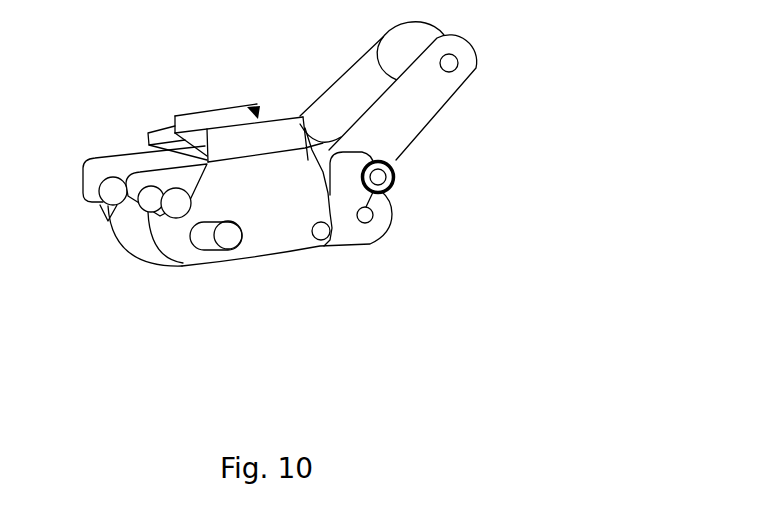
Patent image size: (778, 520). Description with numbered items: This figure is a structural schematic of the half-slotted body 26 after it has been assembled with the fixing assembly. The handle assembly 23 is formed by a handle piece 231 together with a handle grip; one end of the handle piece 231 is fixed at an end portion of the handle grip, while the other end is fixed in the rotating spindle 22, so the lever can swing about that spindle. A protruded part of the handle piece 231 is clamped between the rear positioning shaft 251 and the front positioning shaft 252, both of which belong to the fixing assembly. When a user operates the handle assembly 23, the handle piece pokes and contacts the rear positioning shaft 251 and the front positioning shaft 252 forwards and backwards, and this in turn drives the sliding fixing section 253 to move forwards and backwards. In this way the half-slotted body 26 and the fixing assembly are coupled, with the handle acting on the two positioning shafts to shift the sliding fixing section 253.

The rotating spindle 22 is at (387, 165).
The handle assembly 23 is at (405, 52).
The handle piece 231 is at (420, 105).
The half-slotted body 26 is at (139, 181).
The rear positioning shaft 251 is at (363, 223).
The front positioning shaft 252 is at (314, 243).
The sliding fixing section 253 is at (193, 261).